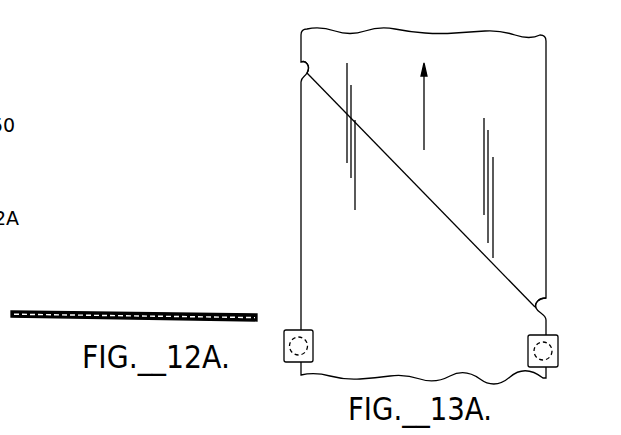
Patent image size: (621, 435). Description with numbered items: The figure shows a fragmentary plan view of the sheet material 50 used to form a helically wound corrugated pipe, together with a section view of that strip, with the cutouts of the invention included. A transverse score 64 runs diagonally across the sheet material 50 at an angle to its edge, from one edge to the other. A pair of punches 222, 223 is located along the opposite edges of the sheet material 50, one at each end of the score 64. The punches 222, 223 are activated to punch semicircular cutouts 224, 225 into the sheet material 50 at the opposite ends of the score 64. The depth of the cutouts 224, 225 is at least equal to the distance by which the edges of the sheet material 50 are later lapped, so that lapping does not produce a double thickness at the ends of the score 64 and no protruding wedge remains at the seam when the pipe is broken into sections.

In FIG. 12A, the sheet material 50 is at (121, 312).
In FIG. 13A, the sheet material 50 is at (539, 153).
In FIG. 12A, the transverse score 64 is at (205, 313).
In FIG. 13A, the transverse score 64 is at (428, 197).
In FIG. 13A, the punch 222 is at (284, 352).
In FIG. 13A, the punch 223 is at (546, 367).
In FIG. 13A, the semicircular cutout 224 is at (298, 72).
In FIG. 13A, the semicircular cutout 225 is at (537, 309).